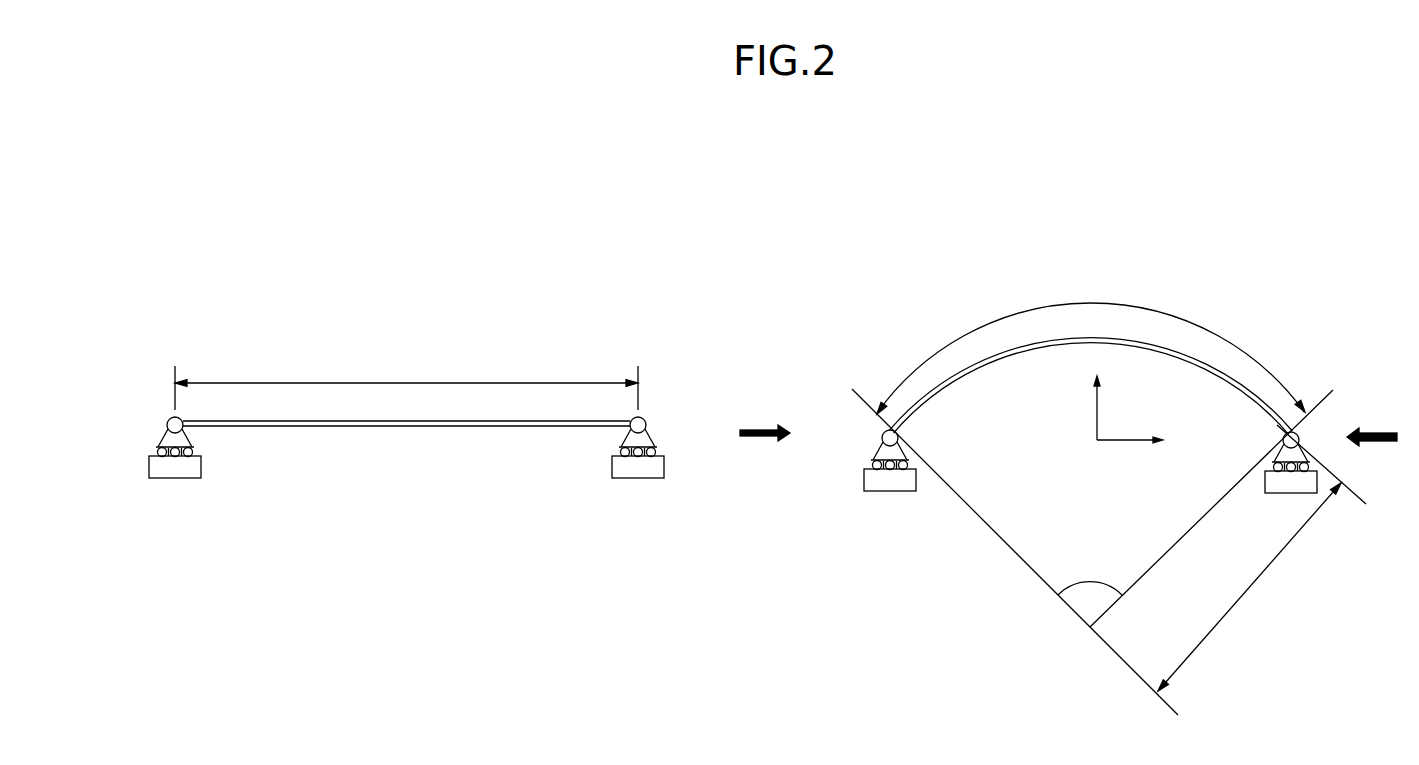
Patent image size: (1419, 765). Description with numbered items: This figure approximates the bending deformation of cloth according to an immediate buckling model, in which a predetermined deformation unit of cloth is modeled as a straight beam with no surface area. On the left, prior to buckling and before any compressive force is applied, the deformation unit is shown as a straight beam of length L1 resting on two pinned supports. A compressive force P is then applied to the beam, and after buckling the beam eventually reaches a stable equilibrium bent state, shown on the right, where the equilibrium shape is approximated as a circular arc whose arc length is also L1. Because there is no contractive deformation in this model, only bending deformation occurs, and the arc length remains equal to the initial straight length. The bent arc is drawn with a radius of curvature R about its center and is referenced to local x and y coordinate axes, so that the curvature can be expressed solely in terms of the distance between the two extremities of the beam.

The length of the straight beam / arc length L1 is at (740, 345).
The compressive load P is at (1054, 432).
The radius of curvature of buckled beam R is at (1249, 587).
The x axis x is at (1130, 453).
The y axis y is at (1086, 401).